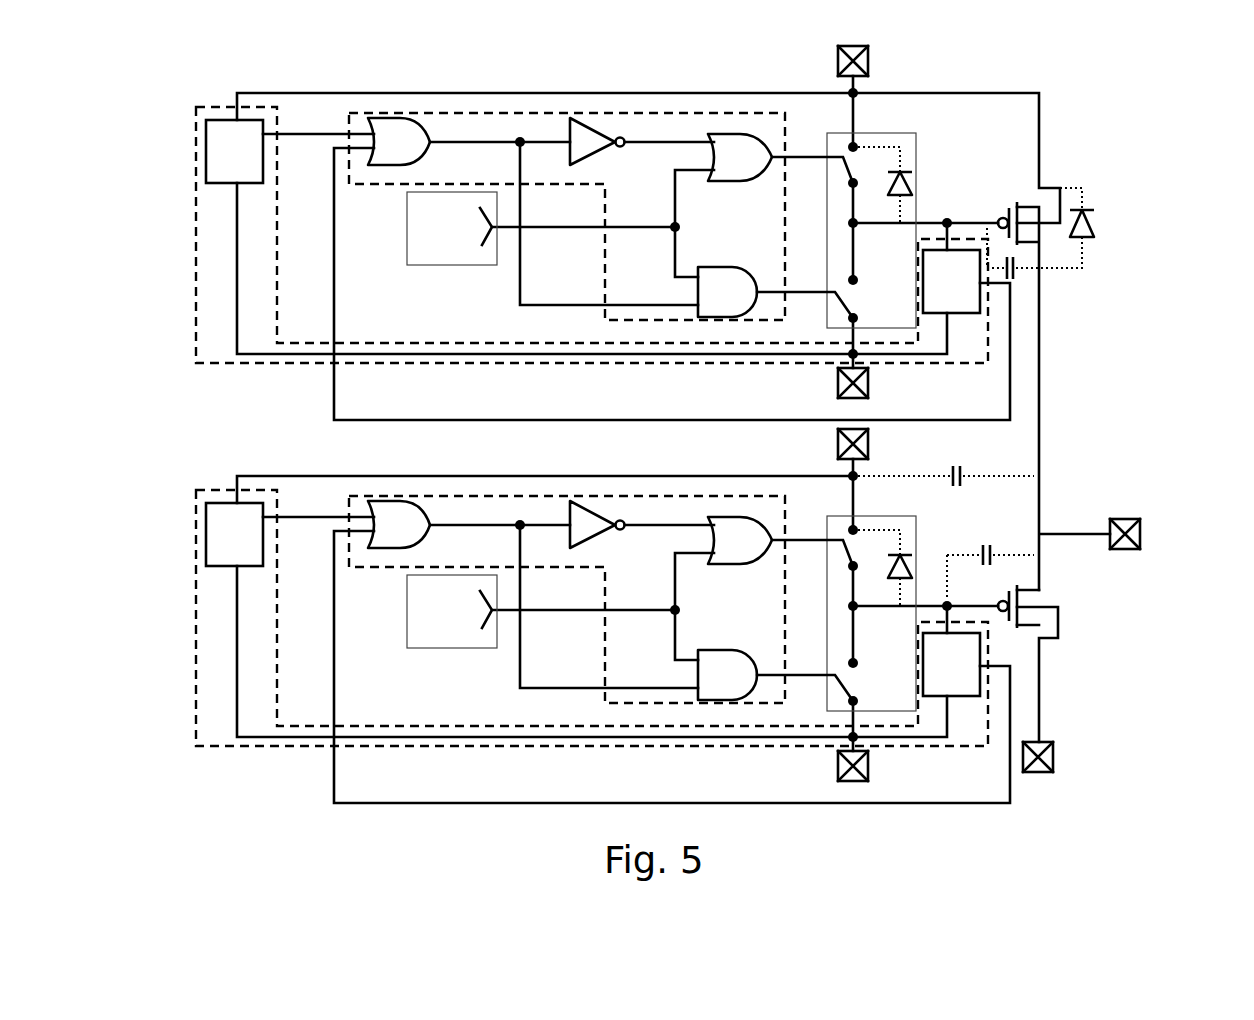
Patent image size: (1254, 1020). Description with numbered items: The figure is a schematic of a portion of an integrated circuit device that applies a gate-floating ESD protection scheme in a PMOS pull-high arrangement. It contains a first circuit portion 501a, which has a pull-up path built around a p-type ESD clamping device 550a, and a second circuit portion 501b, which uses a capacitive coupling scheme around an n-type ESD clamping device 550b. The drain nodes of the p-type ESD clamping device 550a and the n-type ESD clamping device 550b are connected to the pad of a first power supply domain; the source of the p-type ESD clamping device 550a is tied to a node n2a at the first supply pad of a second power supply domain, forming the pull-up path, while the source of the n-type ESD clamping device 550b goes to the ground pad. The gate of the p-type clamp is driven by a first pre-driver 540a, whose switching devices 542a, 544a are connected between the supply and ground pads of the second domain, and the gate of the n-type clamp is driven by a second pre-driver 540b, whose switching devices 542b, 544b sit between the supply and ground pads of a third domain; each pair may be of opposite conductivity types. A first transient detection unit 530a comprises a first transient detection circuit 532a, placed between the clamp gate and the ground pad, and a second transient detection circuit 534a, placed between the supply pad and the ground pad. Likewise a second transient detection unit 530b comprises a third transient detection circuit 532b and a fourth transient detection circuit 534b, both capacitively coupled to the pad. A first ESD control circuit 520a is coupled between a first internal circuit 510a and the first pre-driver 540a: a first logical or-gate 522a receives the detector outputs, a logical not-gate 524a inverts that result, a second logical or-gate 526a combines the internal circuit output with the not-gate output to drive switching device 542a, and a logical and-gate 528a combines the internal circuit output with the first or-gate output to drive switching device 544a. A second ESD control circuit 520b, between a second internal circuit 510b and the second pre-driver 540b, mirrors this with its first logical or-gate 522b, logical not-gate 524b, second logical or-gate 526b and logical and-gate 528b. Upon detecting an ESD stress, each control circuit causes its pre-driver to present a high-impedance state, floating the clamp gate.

The first circuit portion 501a is at (1100, 156).
The second circuit portion 501b is at (1083, 620).
The first internal circuit 510a is at (452, 228).
The second internal circuit 510b is at (452, 611).
The first ESD control circuit 520a is at (528, 110).
The second ESD control circuit 520b is at (528, 493).
The first logical or-gate 522a is at (430, 138).
The first logical or-gate 522b is at (431, 521).
The logical not-gate 524a is at (622, 138).
The logical not-gate 524b is at (623, 521).
The second logical or-gate 526a is at (746, 146).
The second logical or-gate 526b is at (747, 529).
The logical and-gate 528a is at (740, 279).
The logical and-gate 528b is at (741, 662).
The first transient detection unit 530a is at (260, 106).
The second transient detection unit 530b is at (260, 489).
The first transient detection circuit 532a is at (951, 281).
The third transient detection circuit 532b is at (952, 664).
The second transient detection circuit 534a is at (234, 151).
The fourth transient detection circuit 534b is at (235, 534).
The first pre-driver 540a is at (916, 157).
The second pre-driver 540b is at (916, 540).
The switching device 542a is at (816, 181).
The switching device 542b is at (817, 564).
The switching device 544a is at (808, 291).
The switching device 544b is at (809, 674).
The p-type ESD clamping device 550a is at (1048, 236).
The n-type ESD clamping device 550b is at (987, 547).
The node n2a is at (858, 96).